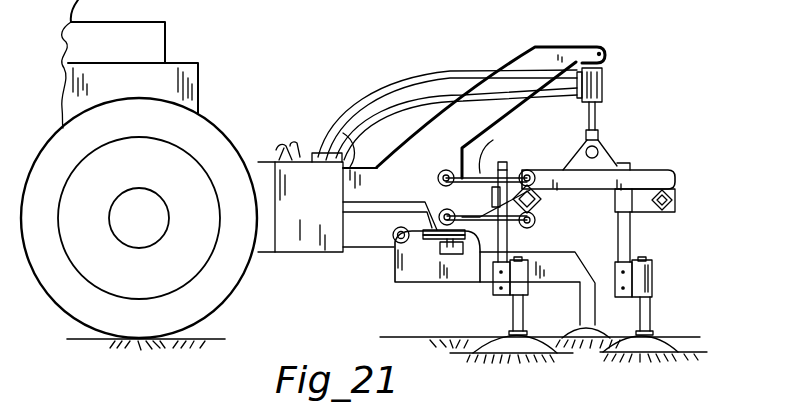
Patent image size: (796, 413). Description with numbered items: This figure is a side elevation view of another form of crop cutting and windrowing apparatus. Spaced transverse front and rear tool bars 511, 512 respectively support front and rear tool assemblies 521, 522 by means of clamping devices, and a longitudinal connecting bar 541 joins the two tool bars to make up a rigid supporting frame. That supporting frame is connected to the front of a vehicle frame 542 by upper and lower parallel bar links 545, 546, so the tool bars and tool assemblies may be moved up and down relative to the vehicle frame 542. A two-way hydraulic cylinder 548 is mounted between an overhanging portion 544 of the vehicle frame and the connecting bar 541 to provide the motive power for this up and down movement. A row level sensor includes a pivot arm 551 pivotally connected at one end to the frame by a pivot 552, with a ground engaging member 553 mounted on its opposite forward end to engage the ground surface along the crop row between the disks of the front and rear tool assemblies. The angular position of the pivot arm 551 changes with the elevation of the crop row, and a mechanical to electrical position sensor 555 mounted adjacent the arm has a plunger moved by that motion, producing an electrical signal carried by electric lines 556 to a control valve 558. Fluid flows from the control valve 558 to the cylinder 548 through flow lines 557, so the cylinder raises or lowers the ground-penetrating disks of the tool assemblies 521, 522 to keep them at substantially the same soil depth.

The front tool bar 511 is at (675, 195).
The rear tool bar 512 is at (537, 205).
The front tool assembly 521 is at (665, 270).
The rear tool assembly 522 is at (540, 355).
The connecting bar 541 is at (640, 173).
The vehicle frame 542 is at (510, 120).
The overhanging portion 544 is at (572, 13).
The upper parallel bar link 545 is at (512, 150).
The lower parallel bar link 546 is at (540, 188).
The two-way hydraulic cylinder 548 is at (600, 80).
The pivot arm 551 is at (447, 273).
The pivot 552 is at (393, 242).
The ground engaging member 553 is at (603, 323).
The mechanical to electrical position sensor 555 is at (482, 258).
The electric lines 556 is at (408, 202).
The flow lines 557 is at (390, 90).
The control valve 558 is at (350, 155).